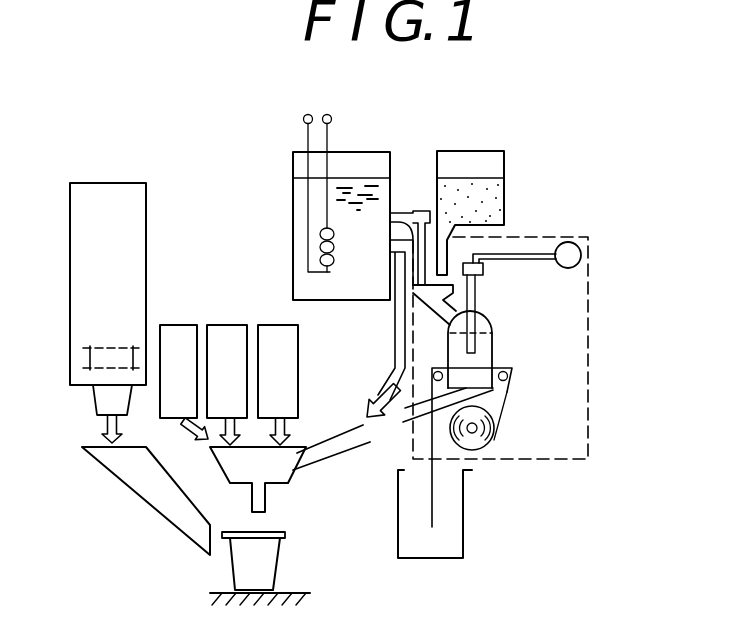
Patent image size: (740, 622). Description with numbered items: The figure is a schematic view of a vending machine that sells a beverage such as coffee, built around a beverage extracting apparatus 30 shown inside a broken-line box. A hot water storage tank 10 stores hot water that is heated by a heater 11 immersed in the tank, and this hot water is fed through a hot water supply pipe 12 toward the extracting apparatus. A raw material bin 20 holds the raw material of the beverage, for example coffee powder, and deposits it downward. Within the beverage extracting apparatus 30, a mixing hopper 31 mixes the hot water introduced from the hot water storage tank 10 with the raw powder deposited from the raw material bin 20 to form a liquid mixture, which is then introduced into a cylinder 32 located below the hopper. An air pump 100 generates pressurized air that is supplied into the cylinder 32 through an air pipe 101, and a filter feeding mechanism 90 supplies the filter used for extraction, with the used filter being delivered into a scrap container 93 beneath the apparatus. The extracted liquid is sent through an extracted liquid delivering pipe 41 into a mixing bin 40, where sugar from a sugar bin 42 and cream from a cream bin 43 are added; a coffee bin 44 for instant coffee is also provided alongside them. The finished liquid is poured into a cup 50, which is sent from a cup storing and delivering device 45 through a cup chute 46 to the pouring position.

The hot water storage tank 10 is at (357, 152).
The heater 11 is at (308, 208).
The hot water supply pipe 12 is at (395, 212).
The raw material bin 20 is at (475, 151).
The beverage extracting apparatus 30 is at (592, 270).
The mixing hopper 31 is at (456, 296).
The cylinder 32 is at (494, 347).
The mixing bin 40 is at (288, 482).
The extracted liquid delivering pipe 41 is at (409, 420).
The sugar bin 42 is at (272, 325).
The cream bin 43 is at (228, 325).
The coffee bin 44 is at (176, 325).
The cup storing and delivering device 45 is at (102, 182).
The cup chute 46 is at (140, 502).
The cup 50 is at (277, 567).
The filter feeding mechanism 90 is at (496, 445).
The scrap container 93 is at (435, 560).
The air pump 100 is at (569, 242).
The air pipe 101 is at (535, 262).